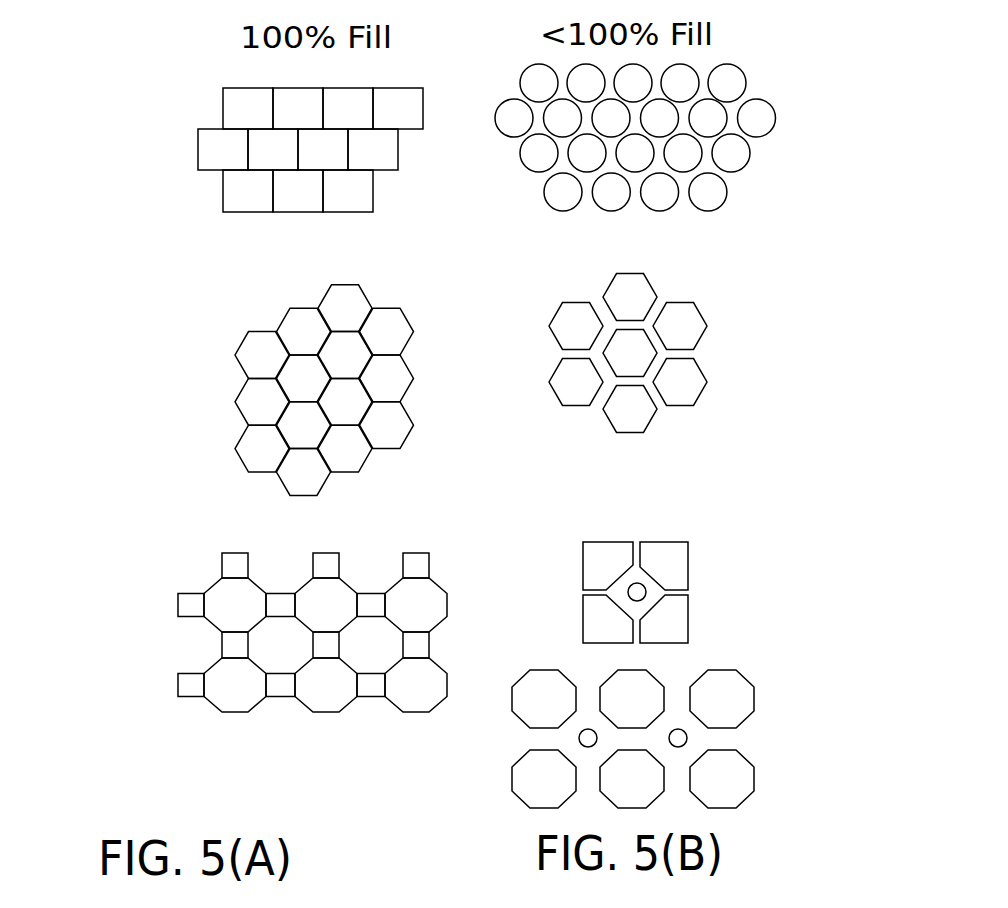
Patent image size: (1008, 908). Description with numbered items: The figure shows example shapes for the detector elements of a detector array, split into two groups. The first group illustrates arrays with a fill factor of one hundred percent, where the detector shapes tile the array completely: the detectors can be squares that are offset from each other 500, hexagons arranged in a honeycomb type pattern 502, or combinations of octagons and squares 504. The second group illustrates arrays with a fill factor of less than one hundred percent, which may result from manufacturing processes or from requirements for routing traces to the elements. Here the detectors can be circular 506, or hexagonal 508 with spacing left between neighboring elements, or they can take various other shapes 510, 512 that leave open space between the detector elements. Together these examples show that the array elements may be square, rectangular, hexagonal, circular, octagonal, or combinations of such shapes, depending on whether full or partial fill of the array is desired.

In FIG. 5A, the offset square detectors 500 is at (241, 152).
In FIG. 5A, the hexagonal honeycomb pattern detectors 502 is at (234, 390).
In FIG. 5A, the octagon and square combination detectors 504 is at (225, 599).
In FIG. 5B, the circular detectors 506 is at (684, 130).
In FIG. 5B, the spaced hexagonal detectors 508 is at (726, 353).
In FIG. 5B, the other-shaped detectors 510 is at (752, 574).
In FIG. 5B, the other-shaped detectors 512 is at (687, 739).